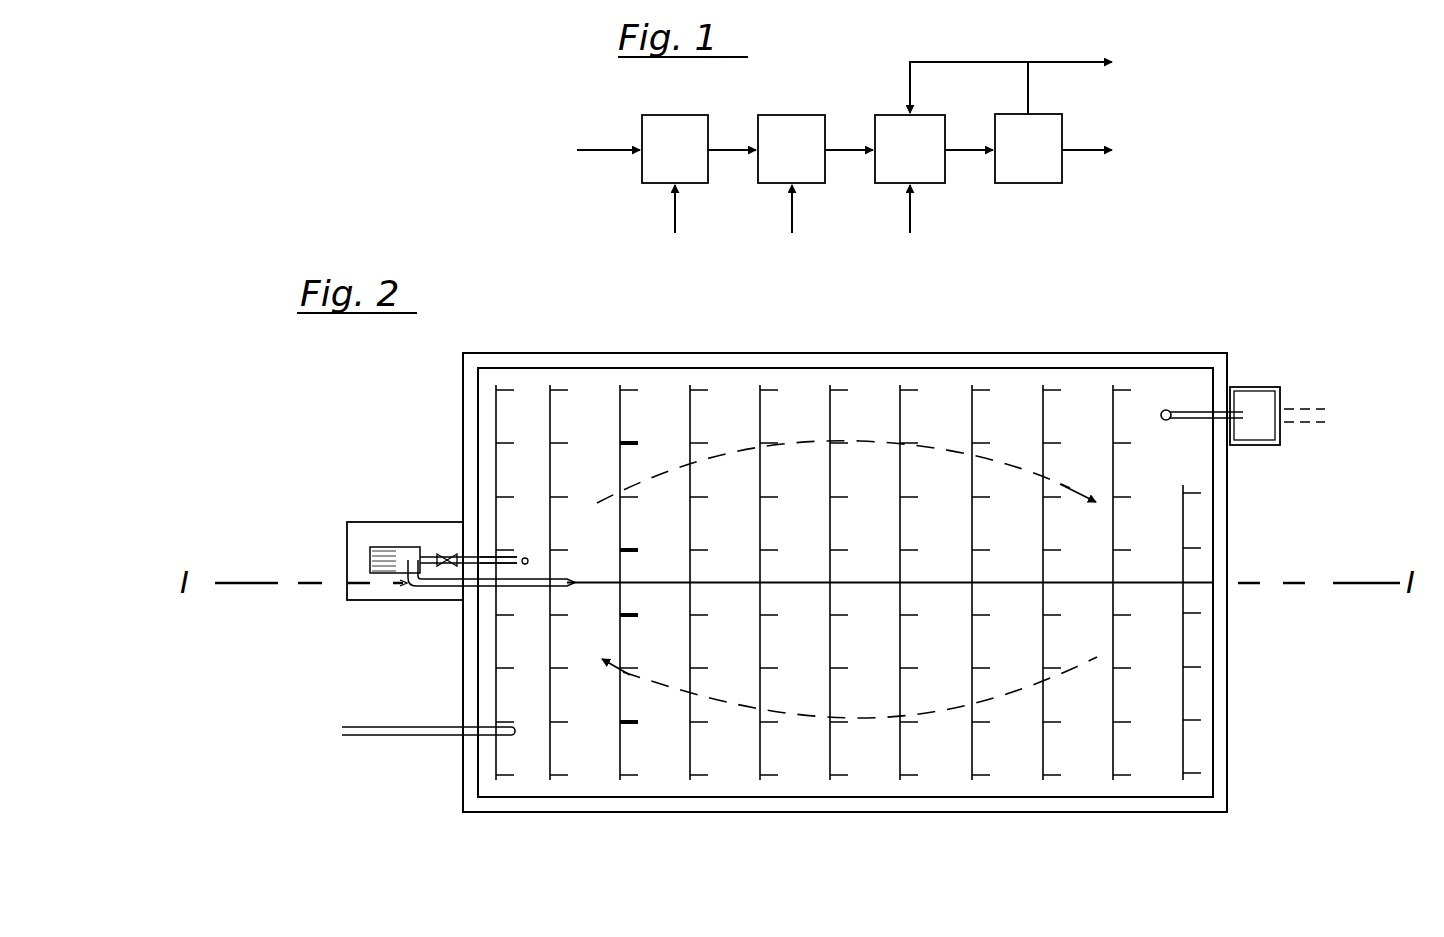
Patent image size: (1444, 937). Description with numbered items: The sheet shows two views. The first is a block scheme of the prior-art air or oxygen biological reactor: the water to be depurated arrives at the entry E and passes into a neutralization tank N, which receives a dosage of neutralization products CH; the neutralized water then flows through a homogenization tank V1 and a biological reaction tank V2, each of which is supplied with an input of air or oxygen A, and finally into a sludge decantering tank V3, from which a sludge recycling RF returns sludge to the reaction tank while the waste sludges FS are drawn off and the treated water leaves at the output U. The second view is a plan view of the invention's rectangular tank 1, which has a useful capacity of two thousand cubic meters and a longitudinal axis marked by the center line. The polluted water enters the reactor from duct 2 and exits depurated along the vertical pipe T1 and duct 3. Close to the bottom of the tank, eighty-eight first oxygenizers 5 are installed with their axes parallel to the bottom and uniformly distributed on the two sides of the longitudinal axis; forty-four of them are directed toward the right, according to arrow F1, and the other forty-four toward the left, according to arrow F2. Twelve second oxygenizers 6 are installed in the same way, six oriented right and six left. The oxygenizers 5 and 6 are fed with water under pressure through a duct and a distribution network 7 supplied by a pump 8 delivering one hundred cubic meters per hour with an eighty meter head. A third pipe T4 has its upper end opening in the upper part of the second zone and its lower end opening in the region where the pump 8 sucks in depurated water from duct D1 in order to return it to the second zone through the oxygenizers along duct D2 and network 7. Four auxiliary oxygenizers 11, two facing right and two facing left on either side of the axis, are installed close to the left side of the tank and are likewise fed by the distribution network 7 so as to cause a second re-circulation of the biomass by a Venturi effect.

In FIG. 2, the tank 1 is at (1065, 362).
In FIG. 2, the duct 2 is at (403, 738).
In FIG. 2, the duct 3 is at (1200, 408).
In FIG. 2, the first oxygenizers 5 is at (627, 390).
In FIG. 2, the second oxygenizers 6 is at (1197, 495).
In FIG. 2, the distribution network 7 is at (760, 417).
In FIG. 2, the pump 8 is at (382, 557).
In FIG. 2, the auxiliary oxygenizers 11 is at (602, 723).
In FIG. 2, the duct D1 is at (502, 557).
In FIG. 2, the duct D2 is at (417, 585).
In FIG. 2, the vertical pipe T1 is at (1166, 410).
In FIG. 2, the third pipe T4 is at (525, 565).
In FIG. 2, the arrow F1 is at (846, 489).
In FIG. 2, the arrow F2 is at (831, 674).
In FIG. 1, the neutralization tank N is at (675, 149).
In FIG. 1, the homogenization tank V1 is at (791, 149).
In FIG. 1, the biological reaction tank V2 is at (910, 149).
In FIG. 1, the sludge decantering tank V3 is at (1028, 148).
In FIG. 1, the entry of the water to be depurated E is at (594, 150).
In FIG. 1, the output signal U is at (1101, 150).
In FIG. 1, the dosage of neutralization products CH is at (678, 224).
In FIG. 1, the input of air or oxygen A is at (852, 224).
In FIG. 1, the sludge recycling RF is at (941, 82).
In FIG. 1, the waste sludges FS is at (1070, 47).